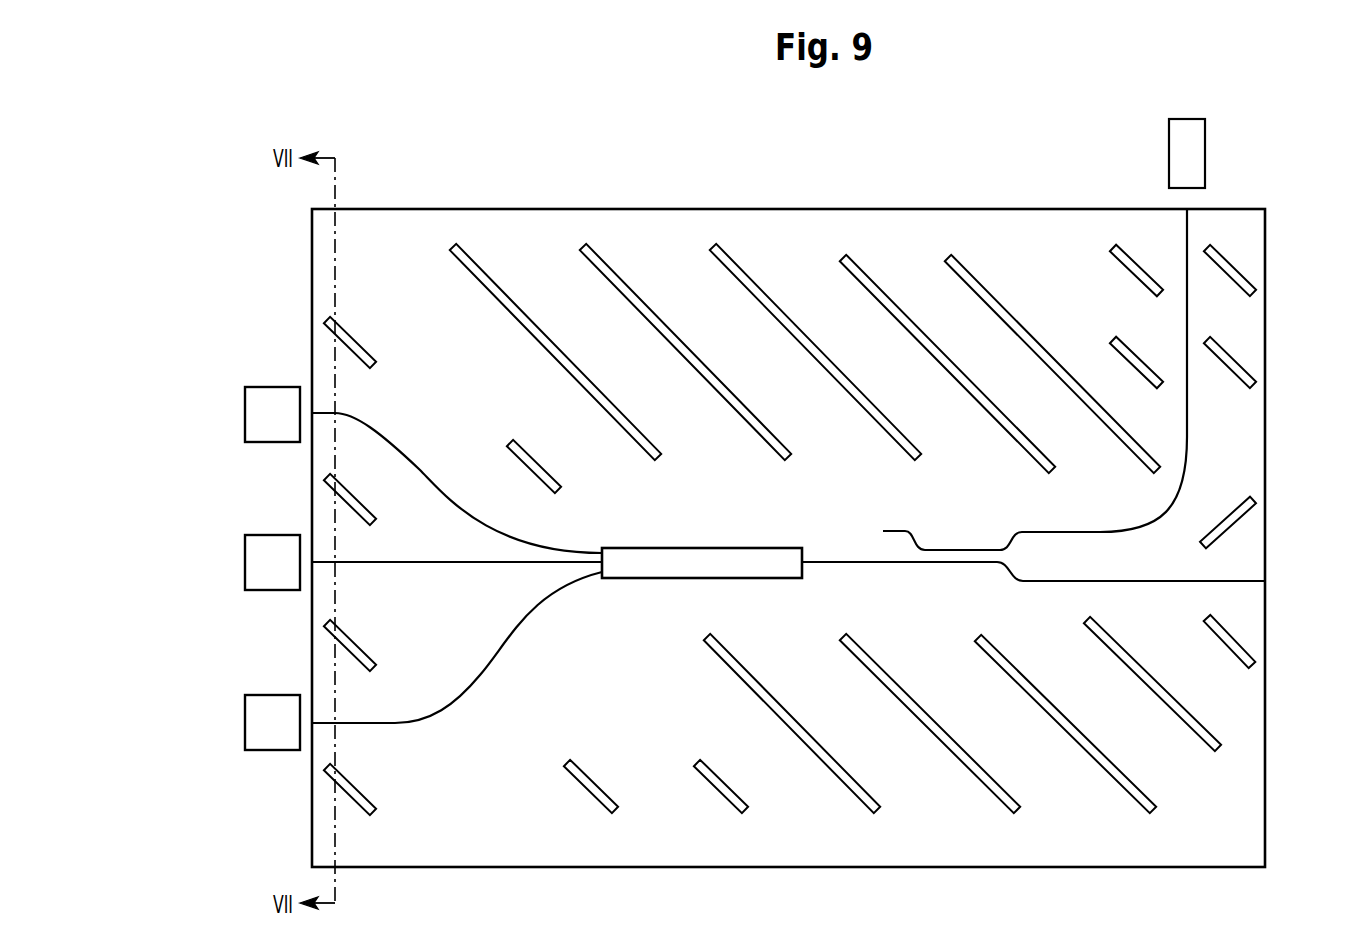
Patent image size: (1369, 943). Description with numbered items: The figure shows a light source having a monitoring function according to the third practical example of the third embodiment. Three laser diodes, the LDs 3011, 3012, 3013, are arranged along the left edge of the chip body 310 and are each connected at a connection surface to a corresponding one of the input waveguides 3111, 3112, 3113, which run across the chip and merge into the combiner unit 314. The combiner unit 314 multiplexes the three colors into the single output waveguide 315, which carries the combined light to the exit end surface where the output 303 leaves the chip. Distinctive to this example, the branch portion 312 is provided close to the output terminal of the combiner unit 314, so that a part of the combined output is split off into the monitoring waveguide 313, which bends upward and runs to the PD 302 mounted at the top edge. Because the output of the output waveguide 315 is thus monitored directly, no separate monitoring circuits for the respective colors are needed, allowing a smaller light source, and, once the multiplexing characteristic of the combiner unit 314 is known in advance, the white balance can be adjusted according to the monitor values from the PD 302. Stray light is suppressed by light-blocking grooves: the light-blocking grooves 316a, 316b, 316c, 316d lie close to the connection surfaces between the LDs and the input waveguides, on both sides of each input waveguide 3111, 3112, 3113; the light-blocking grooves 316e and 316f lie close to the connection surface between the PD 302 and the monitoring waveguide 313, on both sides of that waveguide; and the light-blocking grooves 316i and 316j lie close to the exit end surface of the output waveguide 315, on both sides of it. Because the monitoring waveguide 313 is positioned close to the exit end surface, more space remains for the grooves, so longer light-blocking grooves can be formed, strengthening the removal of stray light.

The LD 3011 is at (245, 420).
The LD 3012 is at (245, 568).
The LD 3013 is at (245, 728).
The PD 302 is at (1187, 118).
The output light 303 is at (1265, 582).
The substrate 310 is at (1019, 206).
The input waveguide 3111 is at (434, 477).
The input waveguide 3112 is at (436, 566).
The input waveguide 3113 is at (437, 718).
The branch portion 312 is at (967, 572).
The monitoring waveguide 313 is at (1188, 425).
The combiner unit 314 is at (713, 545).
The output waveguide 315 is at (812, 560).
The light-blocking groove 316a is at (360, 344).
The light-blocking groove 316b is at (360, 498).
The light-blocking groove 316c is at (360, 646).
The light-blocking groove 316d is at (360, 785).
The light-blocking groove 316e is at (1140, 270).
The light-blocking groove 316f is at (1233, 270).
The light-blocking groove 316i is at (1226, 519).
The light-blocking groove 316j is at (1227, 653).